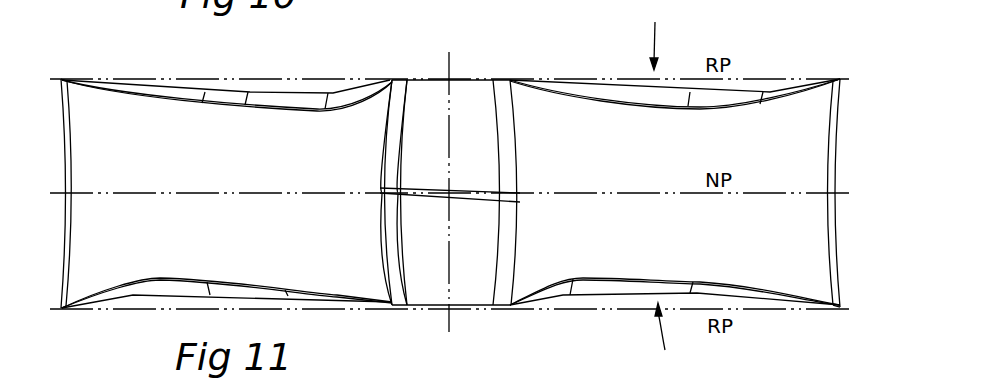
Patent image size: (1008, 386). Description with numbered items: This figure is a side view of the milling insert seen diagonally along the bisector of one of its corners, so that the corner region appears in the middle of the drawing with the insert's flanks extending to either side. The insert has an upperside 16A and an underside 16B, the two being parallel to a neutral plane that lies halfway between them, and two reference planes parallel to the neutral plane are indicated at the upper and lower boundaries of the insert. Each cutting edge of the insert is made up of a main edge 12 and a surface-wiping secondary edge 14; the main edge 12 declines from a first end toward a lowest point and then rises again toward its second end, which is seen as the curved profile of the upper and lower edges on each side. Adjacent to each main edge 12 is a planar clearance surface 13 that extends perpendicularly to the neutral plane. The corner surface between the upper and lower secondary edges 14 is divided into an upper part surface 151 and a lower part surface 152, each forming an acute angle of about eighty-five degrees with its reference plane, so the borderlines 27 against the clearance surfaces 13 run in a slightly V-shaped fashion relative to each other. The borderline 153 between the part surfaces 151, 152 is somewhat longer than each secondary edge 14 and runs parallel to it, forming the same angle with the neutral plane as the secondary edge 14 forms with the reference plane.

The main edge 12 is at (568, 88).
The clearance surface 13 is at (451, 268).
The secondary edge 14 is at (437, 78).
The borderline 27 is at (76, 136).
The upper part surface 151 is at (413, 136).
The lower part surface 152 is at (438, 249).
The borderline 153 is at (472, 190).
The upperside 16A is at (662, 35).
The underside 16B is at (677, 341).